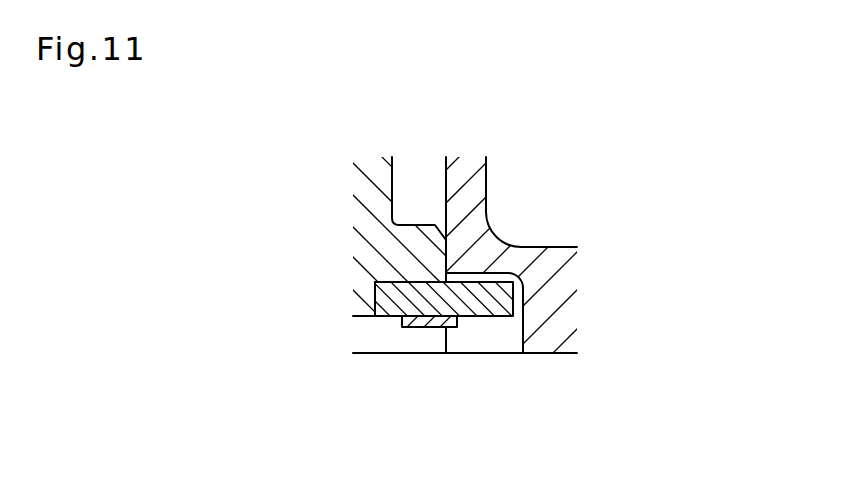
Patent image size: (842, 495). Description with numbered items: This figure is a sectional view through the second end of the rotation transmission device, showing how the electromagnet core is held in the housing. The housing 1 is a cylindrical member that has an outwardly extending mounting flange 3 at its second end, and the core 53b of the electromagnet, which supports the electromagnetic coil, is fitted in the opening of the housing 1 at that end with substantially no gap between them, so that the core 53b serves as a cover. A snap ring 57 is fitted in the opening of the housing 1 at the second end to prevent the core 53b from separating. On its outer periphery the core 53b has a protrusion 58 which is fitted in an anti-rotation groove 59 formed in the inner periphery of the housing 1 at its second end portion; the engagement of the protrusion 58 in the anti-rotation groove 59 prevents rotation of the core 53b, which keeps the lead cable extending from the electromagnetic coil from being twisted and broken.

The housing 1 is at (473, 163).
The mounting flange 3 is at (565, 318).
The core 53b is at (362, 204).
The snap ring 57 is at (423, 330).
The protrusion 58 is at (520, 247).
The anti-rotation groove 59 is at (497, 343).